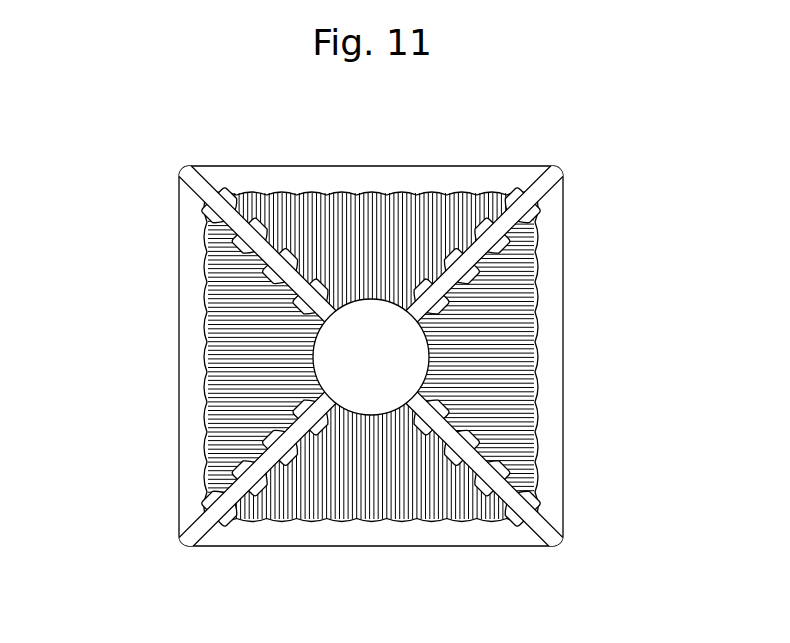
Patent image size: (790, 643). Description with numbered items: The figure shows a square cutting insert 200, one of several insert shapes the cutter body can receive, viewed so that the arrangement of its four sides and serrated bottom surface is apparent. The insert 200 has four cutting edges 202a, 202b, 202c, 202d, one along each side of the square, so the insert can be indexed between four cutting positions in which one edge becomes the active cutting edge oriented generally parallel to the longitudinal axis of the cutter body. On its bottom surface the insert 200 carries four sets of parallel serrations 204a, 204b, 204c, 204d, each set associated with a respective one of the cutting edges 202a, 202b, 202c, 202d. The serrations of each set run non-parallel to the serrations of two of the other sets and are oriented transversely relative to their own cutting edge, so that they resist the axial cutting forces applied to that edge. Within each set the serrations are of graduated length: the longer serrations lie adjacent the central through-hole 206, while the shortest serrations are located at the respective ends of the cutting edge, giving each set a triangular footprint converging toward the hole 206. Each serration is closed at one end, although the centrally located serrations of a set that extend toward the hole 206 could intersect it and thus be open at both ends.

The square cutting insert 200 is at (153, 190).
The cutting edge 202a is at (179, 263).
The cutting edge 202b is at (261, 166).
The cutting edge 202c is at (562, 263).
The cutting edge 202d is at (272, 547).
The set of parallel serrations 204a is at (215, 342).
The set of parallel serrations 204b is at (356, 199).
The set of parallel serrations 204c is at (525, 343).
The set of parallel serrations 204d is at (358, 516).
The through-hole 206 is at (315, 341).